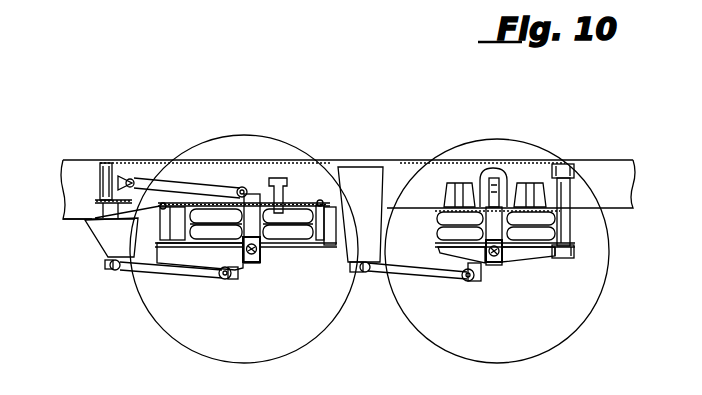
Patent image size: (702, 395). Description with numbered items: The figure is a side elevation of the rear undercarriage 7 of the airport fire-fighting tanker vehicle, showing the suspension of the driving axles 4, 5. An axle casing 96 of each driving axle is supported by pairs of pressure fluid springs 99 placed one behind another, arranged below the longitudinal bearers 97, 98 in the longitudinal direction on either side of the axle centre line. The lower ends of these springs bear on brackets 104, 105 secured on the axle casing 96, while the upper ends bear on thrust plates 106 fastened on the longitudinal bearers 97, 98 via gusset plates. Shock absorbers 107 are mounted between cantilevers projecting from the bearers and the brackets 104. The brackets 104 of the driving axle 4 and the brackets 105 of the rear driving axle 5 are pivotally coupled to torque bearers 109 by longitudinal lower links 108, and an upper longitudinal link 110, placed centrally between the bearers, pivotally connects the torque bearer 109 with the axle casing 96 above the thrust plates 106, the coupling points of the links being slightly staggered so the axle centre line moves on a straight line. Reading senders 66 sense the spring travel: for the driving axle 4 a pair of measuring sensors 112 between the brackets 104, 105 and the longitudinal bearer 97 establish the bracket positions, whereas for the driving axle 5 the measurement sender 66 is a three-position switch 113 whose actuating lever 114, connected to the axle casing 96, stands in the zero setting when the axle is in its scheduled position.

The rear undercarriage 7 is at (398, 101).
The driving axle 4 is at (247, 274).
The driving axle 5 is at (499, 275).
The reading sender 66 is at (150, 245).
The axle casing 96 is at (257, 262).
The longitudinal bearer 97 is at (600, 176).
The longitudinal bearer 98 is at (173, 176).
The pressure fluid spring 99 is at (220, 212).
The bracket 104 is at (208, 251).
The bracket 105 is at (286, 249).
The thrust plate 106 is at (283, 207).
The shock absorber 107 is at (569, 233).
The longitudinal lower link 108 is at (167, 264).
The torque bearer 109 is at (110, 240).
The upper longitudinal link 110 is at (203, 186).
The measuring sensor 112 is at (152, 226).
The switch 113 is at (494, 157).
The actuating lever 114 is at (512, 208).